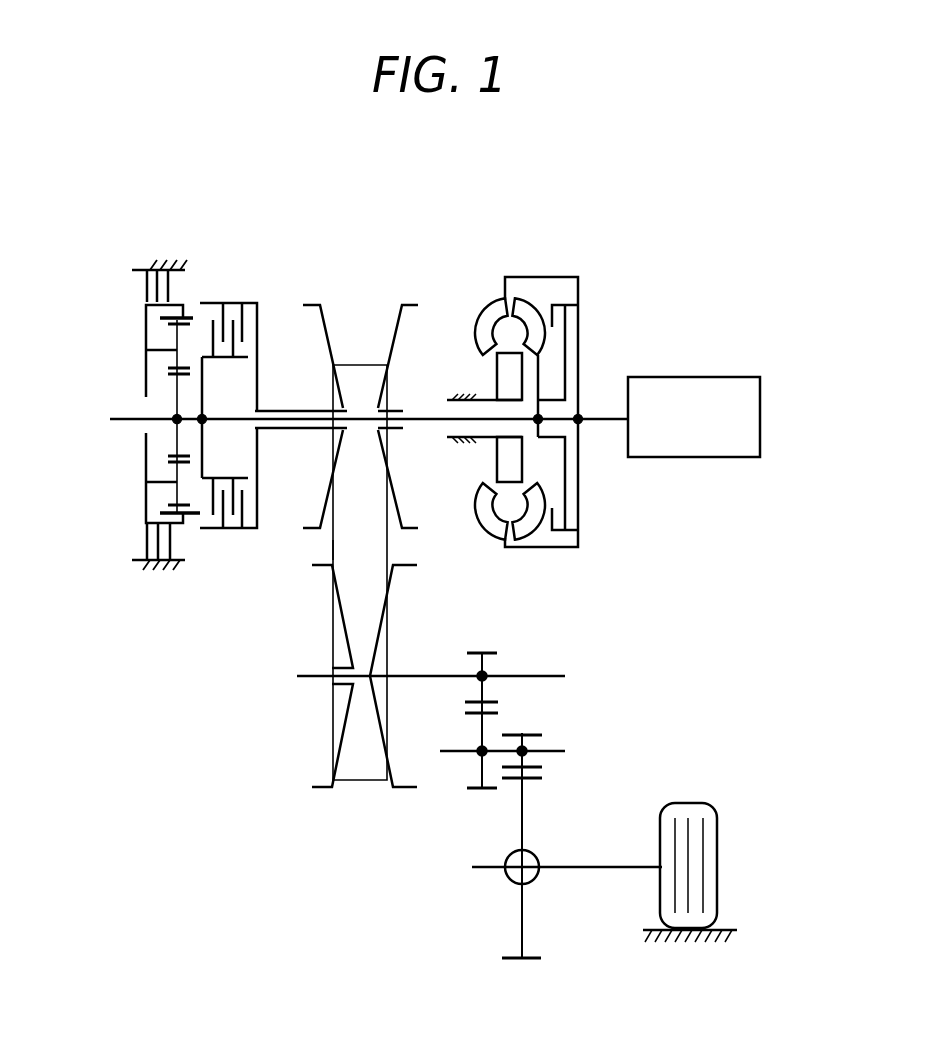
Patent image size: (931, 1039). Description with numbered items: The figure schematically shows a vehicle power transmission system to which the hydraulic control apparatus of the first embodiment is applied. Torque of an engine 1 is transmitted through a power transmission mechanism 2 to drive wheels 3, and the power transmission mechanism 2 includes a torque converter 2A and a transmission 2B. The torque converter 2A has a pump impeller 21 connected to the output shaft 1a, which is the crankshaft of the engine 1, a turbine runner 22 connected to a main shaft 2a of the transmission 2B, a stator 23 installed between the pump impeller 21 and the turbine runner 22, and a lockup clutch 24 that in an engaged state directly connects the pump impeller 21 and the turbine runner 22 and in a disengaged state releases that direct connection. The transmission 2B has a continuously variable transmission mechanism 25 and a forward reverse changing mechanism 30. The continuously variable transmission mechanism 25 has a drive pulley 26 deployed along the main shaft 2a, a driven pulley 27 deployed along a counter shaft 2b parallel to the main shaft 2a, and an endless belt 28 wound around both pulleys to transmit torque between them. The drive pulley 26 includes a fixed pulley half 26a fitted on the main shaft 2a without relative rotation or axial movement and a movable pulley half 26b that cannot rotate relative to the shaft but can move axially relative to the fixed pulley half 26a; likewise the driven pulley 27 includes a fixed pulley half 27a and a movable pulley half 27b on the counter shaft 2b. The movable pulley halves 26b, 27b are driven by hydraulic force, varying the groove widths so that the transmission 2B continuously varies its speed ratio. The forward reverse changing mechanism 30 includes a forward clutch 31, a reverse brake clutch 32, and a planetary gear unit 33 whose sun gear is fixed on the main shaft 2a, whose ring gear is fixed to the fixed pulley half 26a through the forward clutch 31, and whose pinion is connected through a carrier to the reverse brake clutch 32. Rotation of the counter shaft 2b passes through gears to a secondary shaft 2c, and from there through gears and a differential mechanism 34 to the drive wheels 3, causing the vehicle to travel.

The engine 1 is at (735, 377).
The output shaft 1a is at (600, 422).
The power transmission mechanism 2 is at (462, 228).
The torque converter 2A is at (543, 265).
The transmission 2B is at (343, 247).
The main shaft 2a is at (422, 423).
The counter shaft 2b is at (432, 677).
The secondary shaft 2c is at (553, 748).
The drive wheels 3 is at (717, 833).
The pump impeller 21 is at (500, 298).
The turbine runner 22 is at (528, 298).
The stator 23 is at (497, 384).
The lockup clutch 24 is at (567, 303).
The continuously variable transmission mechanism 25 is at (353, 313).
The drive pulley 26 is at (407, 335).
The fixed pulley half 26a is at (322, 322).
The movable pulley half 26b is at (393, 347).
The driven pulley 27 is at (322, 702).
The fixed pulley half 27a is at (405, 567).
The movable pulley half 27b is at (332, 595).
The endless belt 28 is at (332, 545).
The forward reverse changing mechanism 30 is at (202, 280).
The forward clutch 31 is at (235, 298).
The reverse brake clutch 32 is at (135, 293).
The planetary gear unit 33 is at (168, 400).
The differential mechanism 34 is at (512, 885).